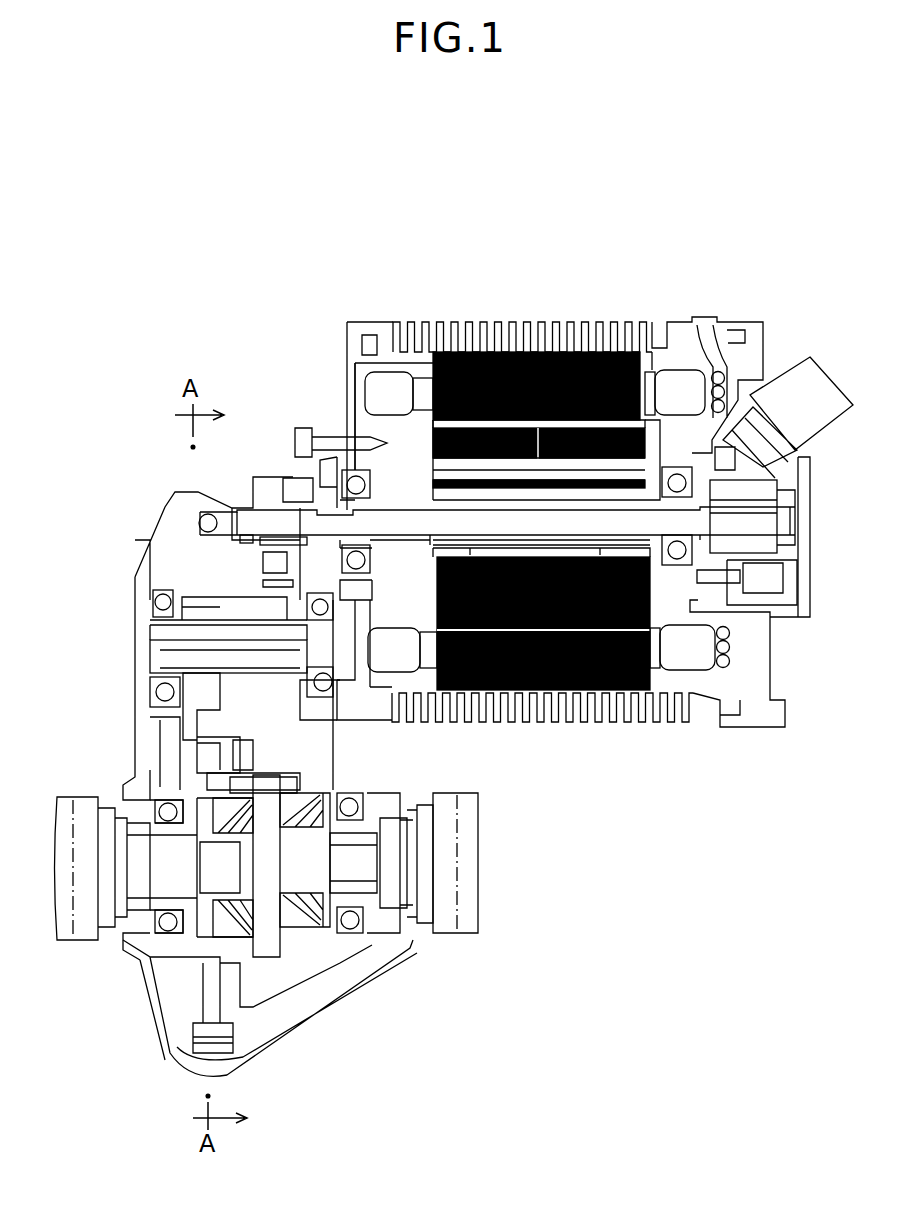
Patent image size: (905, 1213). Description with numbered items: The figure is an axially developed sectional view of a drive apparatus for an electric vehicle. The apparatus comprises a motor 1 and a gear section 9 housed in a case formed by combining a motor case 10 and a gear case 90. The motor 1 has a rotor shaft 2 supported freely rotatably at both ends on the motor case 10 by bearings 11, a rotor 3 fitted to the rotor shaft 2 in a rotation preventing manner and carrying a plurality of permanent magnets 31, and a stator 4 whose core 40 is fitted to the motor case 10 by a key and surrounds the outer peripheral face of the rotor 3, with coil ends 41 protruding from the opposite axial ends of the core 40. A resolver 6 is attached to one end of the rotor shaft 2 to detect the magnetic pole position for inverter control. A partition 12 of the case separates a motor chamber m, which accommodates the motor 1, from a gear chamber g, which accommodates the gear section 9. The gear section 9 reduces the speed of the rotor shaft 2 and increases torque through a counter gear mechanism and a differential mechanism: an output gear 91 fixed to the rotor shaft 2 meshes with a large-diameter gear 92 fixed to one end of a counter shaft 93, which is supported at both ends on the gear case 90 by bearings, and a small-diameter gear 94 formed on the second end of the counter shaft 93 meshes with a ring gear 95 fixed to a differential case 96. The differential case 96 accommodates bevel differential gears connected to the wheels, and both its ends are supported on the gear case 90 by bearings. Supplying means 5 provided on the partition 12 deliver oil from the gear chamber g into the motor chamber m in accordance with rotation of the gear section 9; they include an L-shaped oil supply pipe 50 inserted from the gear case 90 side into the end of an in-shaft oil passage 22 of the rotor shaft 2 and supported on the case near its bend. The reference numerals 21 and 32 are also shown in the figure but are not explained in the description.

The motor 1 is at (526, 515).
The rotor shaft 2 is at (385, 542).
The rotor 3 is at (517, 515).
The stator 4 is at (506, 558).
The supplying means 5 is at (181, 530).
The resolver 6 is at (797, 550).
The gear section 9 is at (267, 907).
The motor case 10 is at (380, 396).
The bearings 11 is at (364, 477).
The partition 12 is at (365, 650).
The rotor core 21 is at (433, 605).
The in-shaft oil passage 22 is at (497, 523).
The permanent magnets 31 is at (440, 426).
The rotor conductor 32 is at (490, 488).
The core 40 is at (622, 690).
The coil ends 41 is at (380, 397).
The oil supply pipe 50 is at (243, 520).
The gear case 90 is at (333, 745).
The output gear 91 is at (297, 483).
The large-diameter gear 92 is at (287, 580).
The counter shaft 93 is at (253, 672).
The small-diameter gear 94 is at (210, 602).
The ring gear 95 is at (210, 703).
The differential case 96 is at (290, 945).
The motor chamber m is at (422, 680).
The gear chamber g is at (280, 985).